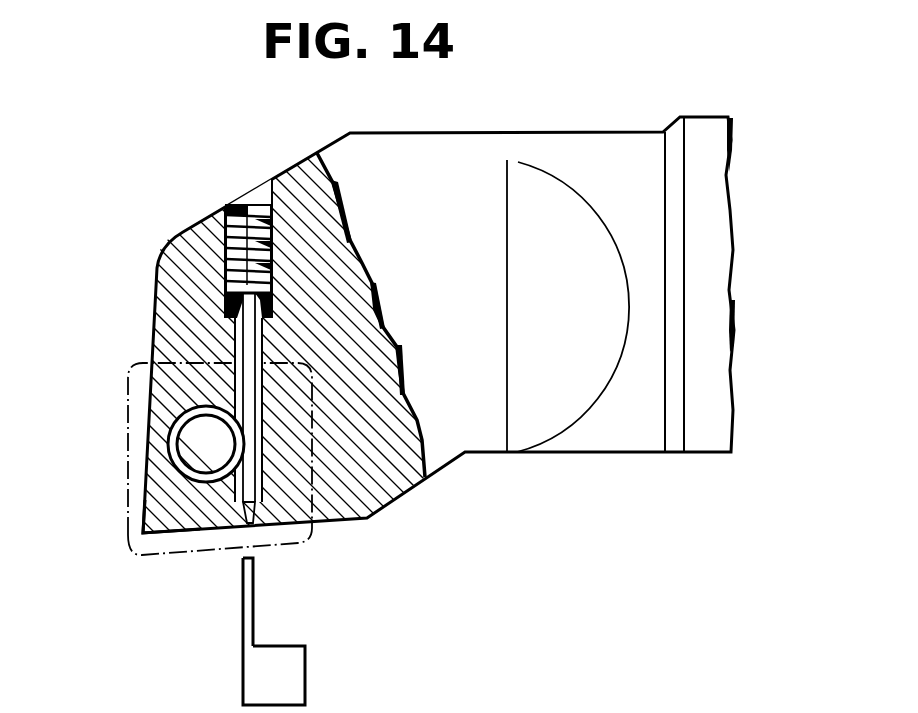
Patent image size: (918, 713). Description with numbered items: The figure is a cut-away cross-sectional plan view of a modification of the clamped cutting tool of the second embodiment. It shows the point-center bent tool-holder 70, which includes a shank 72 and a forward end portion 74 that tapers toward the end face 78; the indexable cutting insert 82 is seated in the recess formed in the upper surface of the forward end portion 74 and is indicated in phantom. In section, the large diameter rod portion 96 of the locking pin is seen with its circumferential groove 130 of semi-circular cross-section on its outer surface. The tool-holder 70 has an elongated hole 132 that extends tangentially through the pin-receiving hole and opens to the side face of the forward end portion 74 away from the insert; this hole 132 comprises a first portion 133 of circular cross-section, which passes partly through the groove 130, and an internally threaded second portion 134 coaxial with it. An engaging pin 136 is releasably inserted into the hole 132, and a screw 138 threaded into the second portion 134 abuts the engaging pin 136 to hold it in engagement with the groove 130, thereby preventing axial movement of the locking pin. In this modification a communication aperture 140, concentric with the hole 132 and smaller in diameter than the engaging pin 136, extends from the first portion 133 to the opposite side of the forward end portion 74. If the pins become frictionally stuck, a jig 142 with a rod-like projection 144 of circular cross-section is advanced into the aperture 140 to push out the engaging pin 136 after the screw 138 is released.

The tool-holder 70 is at (541, 108).
The shank 72 is at (707, 142).
The forward end portion 74 is at (305, 200).
The end face 78 is at (143, 507).
The indexable cutting insert 82 is at (127, 420).
The large diameter rod portion 96 is at (170, 445).
The circumferential groove 130 is at (190, 450).
The elongated hole 132 is at (240, 332).
The first portion 133 is at (235, 392).
The internally threaded second portion 134 is at (227, 213).
The engaging pin 136 is at (233, 512).
The screw 138 is at (243, 207).
The communication aperture 140 is at (247, 523).
The jig 142 is at (285, 677).
The rod-like projection 144 is at (247, 609).